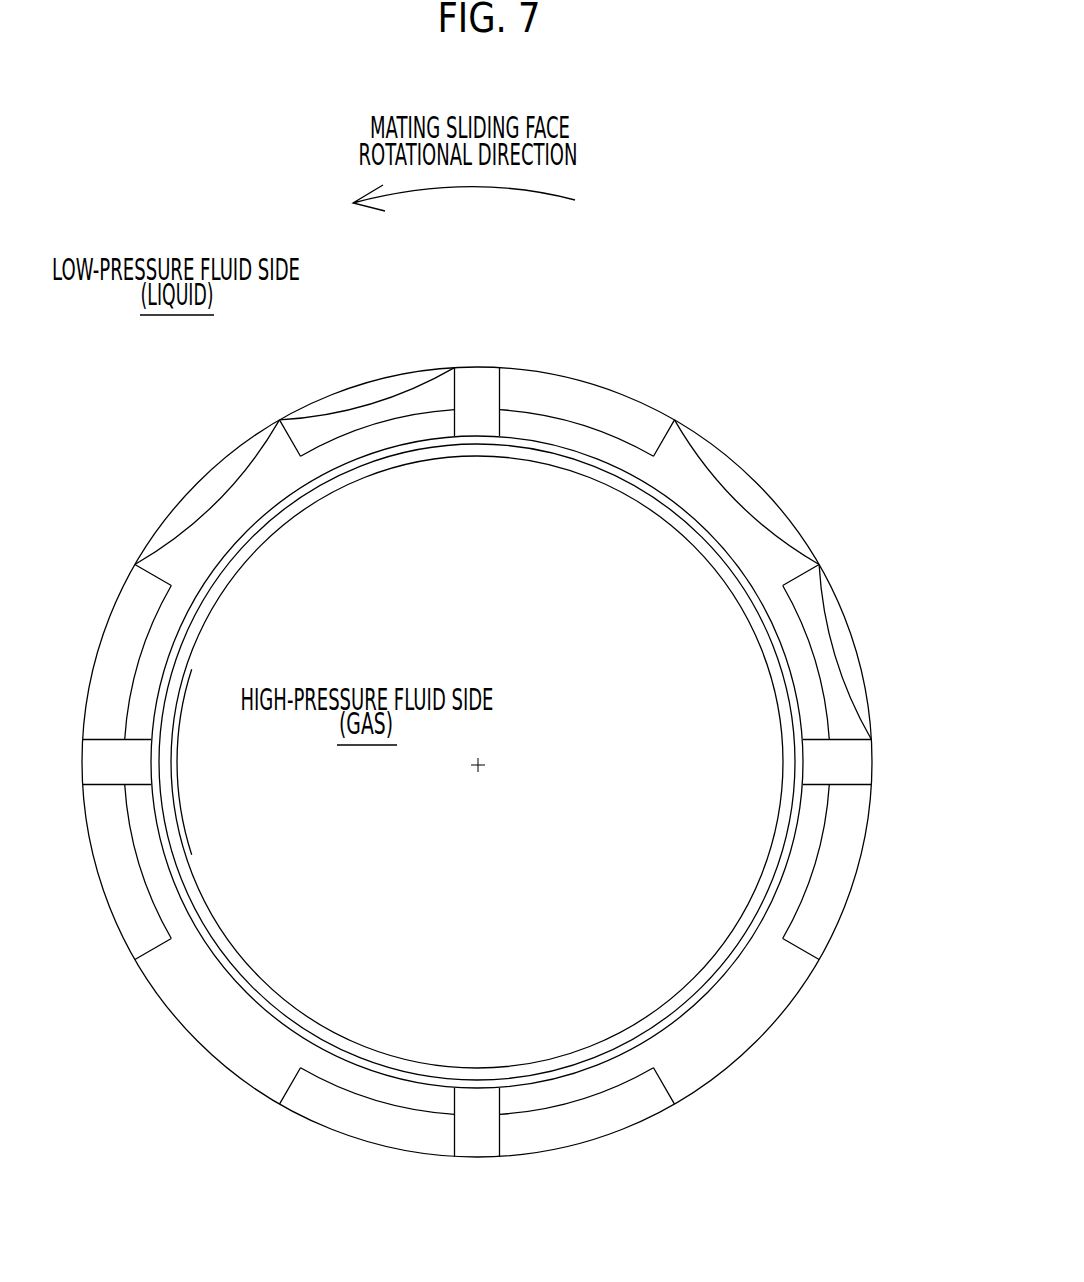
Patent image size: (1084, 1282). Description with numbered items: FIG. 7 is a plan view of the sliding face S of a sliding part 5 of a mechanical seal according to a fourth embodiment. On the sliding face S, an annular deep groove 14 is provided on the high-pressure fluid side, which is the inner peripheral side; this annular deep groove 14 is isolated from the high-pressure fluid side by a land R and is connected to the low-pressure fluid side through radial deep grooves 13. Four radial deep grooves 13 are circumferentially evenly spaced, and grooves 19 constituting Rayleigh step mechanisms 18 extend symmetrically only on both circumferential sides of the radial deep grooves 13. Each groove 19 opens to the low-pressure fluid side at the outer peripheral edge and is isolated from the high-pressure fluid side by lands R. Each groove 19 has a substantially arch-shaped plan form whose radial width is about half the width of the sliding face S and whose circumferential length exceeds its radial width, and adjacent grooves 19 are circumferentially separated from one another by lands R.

The stationary seal ring (sliding component) 5 is at (753, 467).
The radial deep groove 13 is at (482, 390).
The annular deep groove 14 is at (428, 450).
The Rayleigh step mechanism 18 is at (389, 372).
The groove 19 is at (357, 407).
The land R is at (232, 480).
The sliding face S is at (705, 465).